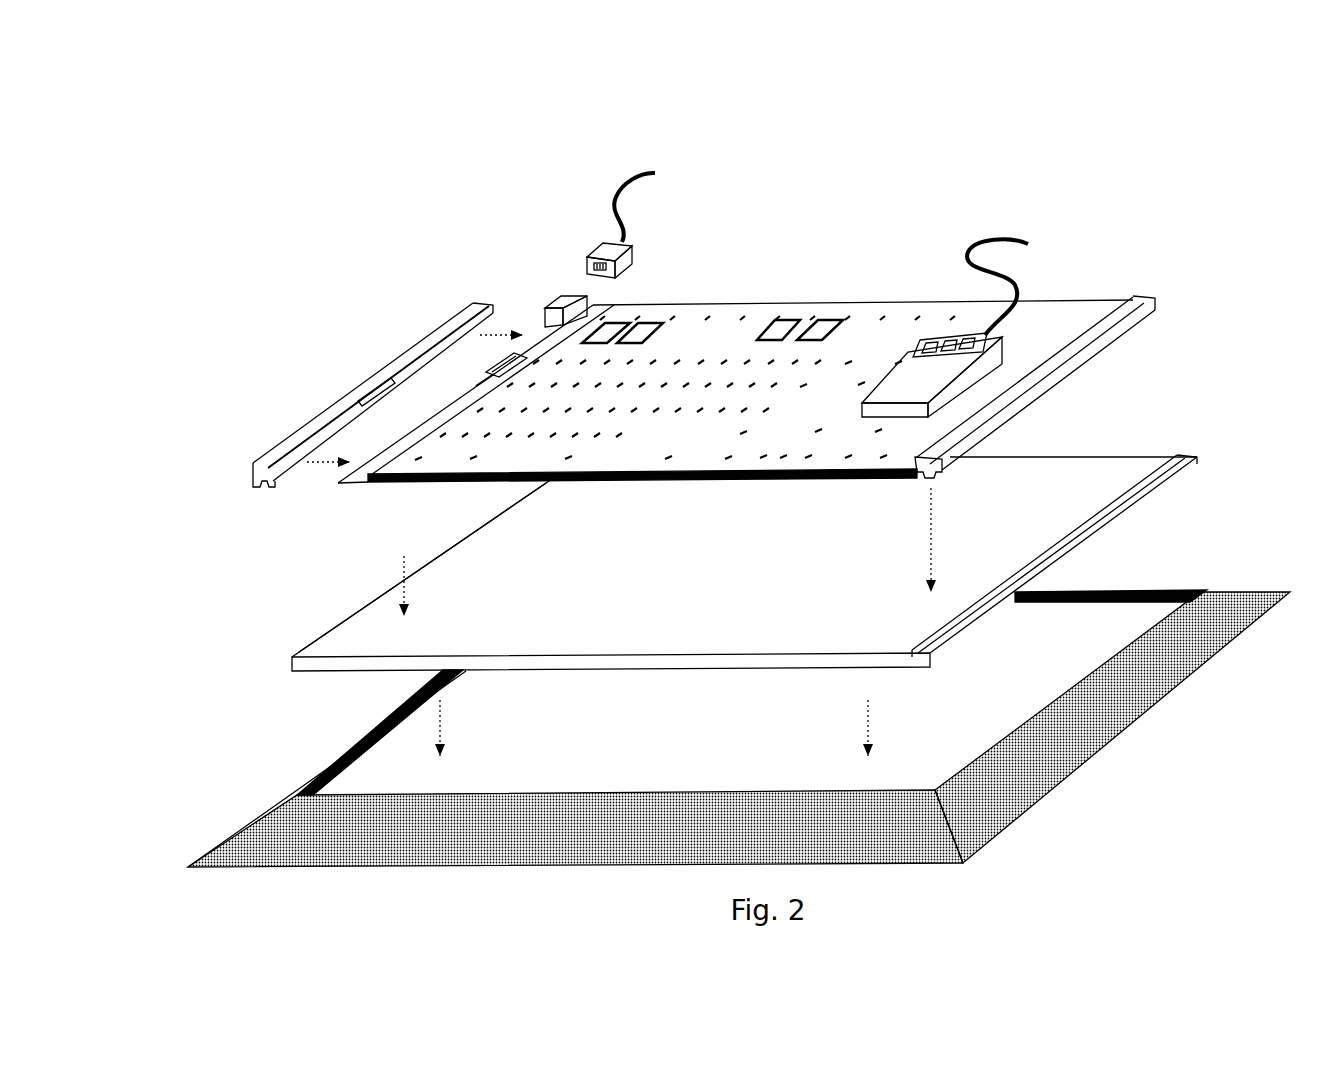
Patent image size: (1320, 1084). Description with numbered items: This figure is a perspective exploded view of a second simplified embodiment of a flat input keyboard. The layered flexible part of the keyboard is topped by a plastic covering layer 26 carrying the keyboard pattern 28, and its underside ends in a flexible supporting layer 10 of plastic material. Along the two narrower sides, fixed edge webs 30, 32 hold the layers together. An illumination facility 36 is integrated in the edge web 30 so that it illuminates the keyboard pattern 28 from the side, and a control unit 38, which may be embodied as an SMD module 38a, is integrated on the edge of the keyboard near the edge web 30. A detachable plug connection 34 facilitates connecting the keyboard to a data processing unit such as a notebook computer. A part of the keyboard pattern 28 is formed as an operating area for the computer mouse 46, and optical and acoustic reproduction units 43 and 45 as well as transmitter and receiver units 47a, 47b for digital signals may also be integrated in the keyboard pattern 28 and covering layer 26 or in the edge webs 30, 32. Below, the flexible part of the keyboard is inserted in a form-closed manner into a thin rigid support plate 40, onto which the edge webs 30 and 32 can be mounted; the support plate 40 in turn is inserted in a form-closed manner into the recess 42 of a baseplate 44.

The flexible supporting layer 10 is at (405, 487).
The covering layer 26 is at (1048, 325).
The keyboard pattern 28 is at (672, 364).
The edge web 30 is at (423, 348).
The edge web 32 is at (1122, 330).
The detachable plug connection 34 is at (615, 183).
The illumination facility 36 is at (356, 400).
The control unit 38 is at (507, 354).
The SMD module 38a is at (486, 382).
The support plate 40 is at (1078, 475).
The recess 42 is at (1060, 640).
The optical reproduction unit 43 is at (621, 322).
The baseplate 44 is at (1072, 747).
The acoustic reproduction unit 45 is at (656, 322).
The operating area for the computer mouse 46 is at (918, 385).
The transmitter unit 47a is at (790, 319).
The receiver unit 47b is at (822, 319).